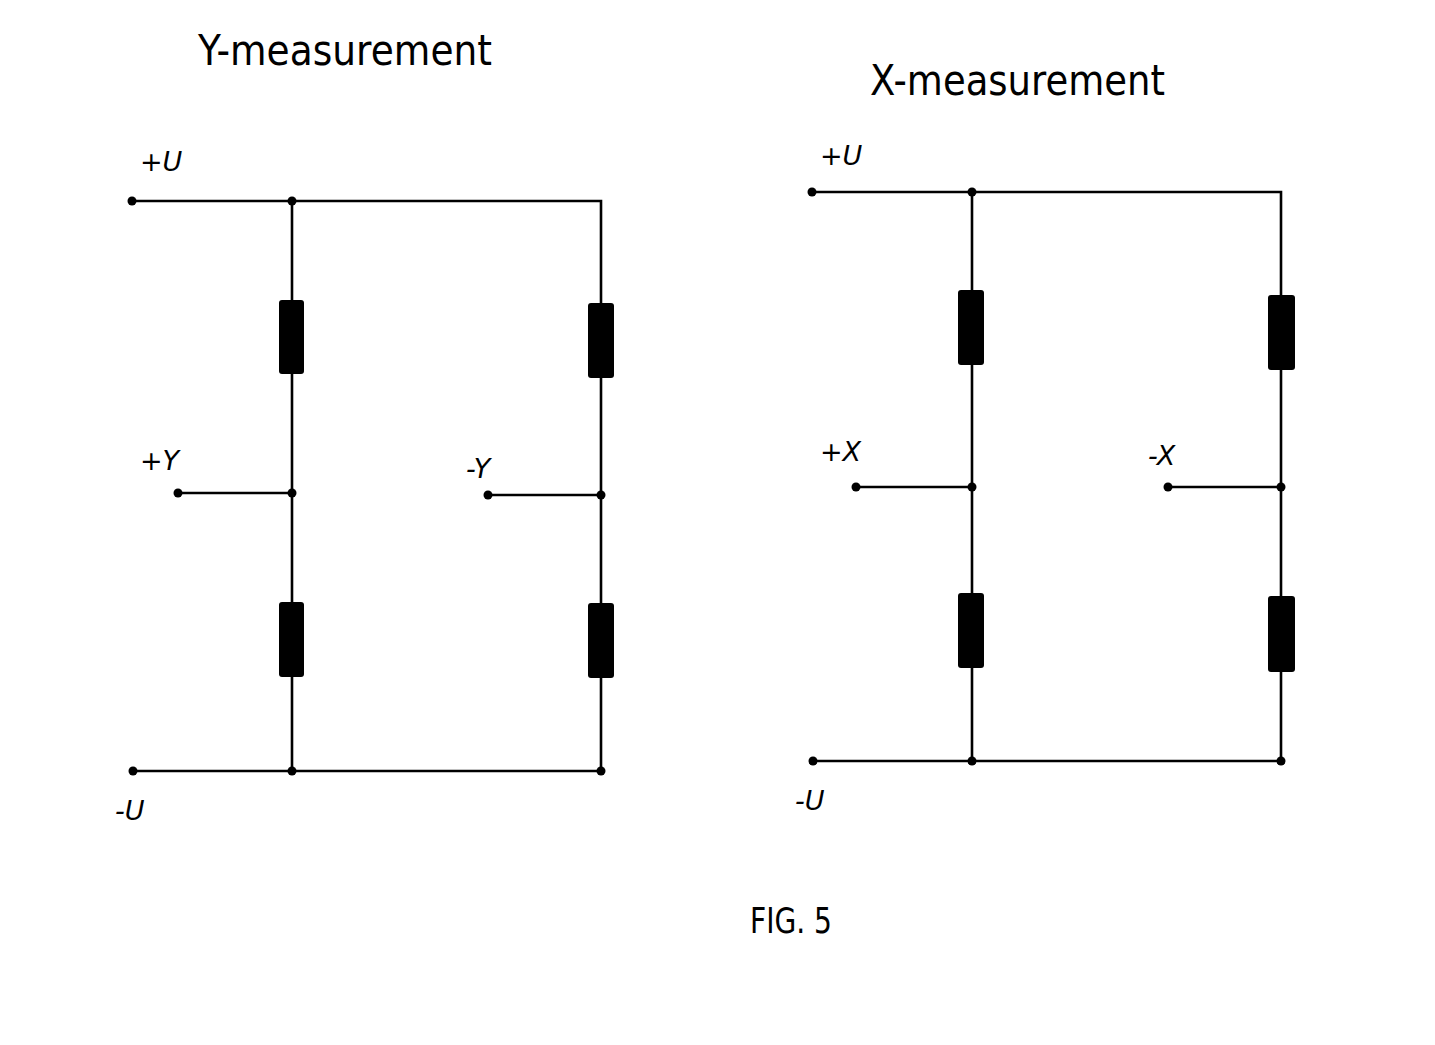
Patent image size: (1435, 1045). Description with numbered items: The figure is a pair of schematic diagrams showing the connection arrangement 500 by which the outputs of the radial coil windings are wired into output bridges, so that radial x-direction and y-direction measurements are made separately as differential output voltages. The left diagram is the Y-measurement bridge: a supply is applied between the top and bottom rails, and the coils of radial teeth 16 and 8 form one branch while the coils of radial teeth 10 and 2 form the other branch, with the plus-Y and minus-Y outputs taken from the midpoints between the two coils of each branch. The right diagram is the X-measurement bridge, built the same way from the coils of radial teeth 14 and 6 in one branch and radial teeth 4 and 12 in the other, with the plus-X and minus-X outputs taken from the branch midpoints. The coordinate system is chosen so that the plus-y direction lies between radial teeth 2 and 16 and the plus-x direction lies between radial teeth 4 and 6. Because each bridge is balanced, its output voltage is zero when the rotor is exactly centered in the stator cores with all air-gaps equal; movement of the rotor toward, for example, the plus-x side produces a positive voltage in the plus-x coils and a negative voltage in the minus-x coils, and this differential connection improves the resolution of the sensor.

The connection arrangement 500 is at (563, 118).
The radial tooth 16 is at (350, 337).
The radial tooth 8 is at (339, 639).
The radial tooth 10 is at (633, 340).
The radial tooth 2 is at (627, 640).
The radial tooth 14 is at (1029, 327).
The radial tooth 6 is at (1019, 630).
The radial tooth 4 is at (1306, 332).
The radial tooth 12 is at (1318, 634).